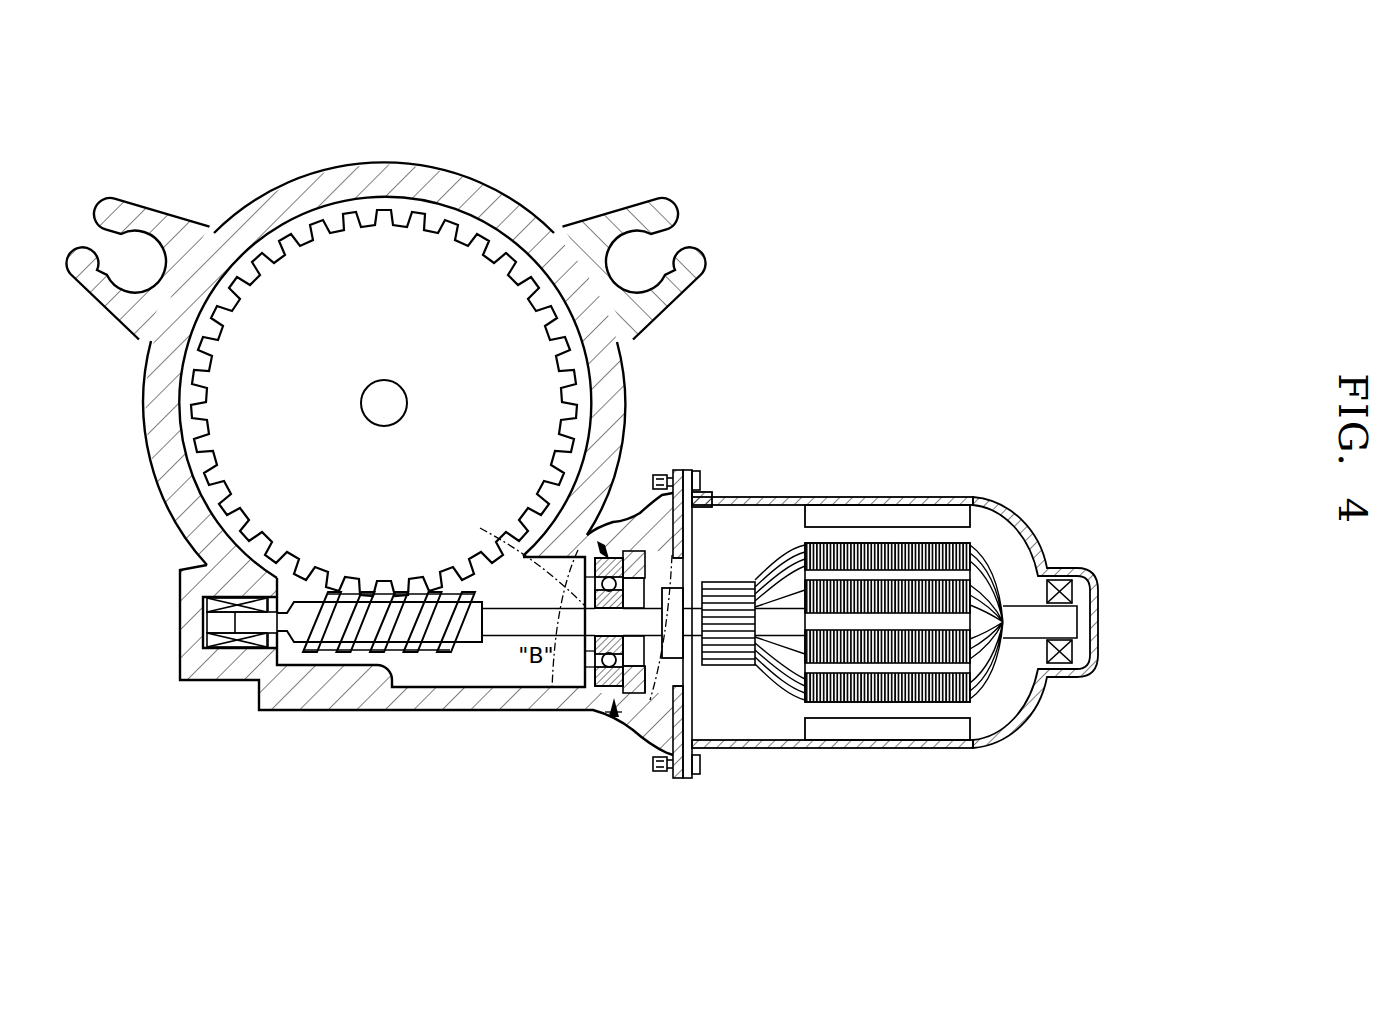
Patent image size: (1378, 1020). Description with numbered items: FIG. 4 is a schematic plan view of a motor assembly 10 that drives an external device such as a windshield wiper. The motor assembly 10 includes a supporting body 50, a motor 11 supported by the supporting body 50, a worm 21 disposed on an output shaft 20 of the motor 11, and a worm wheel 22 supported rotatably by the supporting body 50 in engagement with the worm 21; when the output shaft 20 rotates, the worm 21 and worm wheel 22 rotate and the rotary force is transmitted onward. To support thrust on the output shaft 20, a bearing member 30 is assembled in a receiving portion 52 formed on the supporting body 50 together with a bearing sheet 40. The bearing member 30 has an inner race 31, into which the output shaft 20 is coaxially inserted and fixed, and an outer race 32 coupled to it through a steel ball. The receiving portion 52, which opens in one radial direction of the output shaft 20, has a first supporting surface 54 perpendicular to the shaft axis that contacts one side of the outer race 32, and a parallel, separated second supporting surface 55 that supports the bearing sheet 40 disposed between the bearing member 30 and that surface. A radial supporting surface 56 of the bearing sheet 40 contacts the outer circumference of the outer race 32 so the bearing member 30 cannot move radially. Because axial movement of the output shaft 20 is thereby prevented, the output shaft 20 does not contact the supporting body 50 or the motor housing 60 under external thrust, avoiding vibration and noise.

The motor assembly 10 is at (798, 395).
The motor 11 is at (934, 482).
The output shaft 20 is at (498, 625).
The worm 21 is at (343, 652).
The worm wheel 22 is at (395, 255).
The bearing member 30 is at (600, 543).
The inner race 31 is at (594, 598).
The outer race 32 is at (622, 553).
The bearing sheet 40 is at (626, 705).
The supporting body 50 is at (408, 697).
The receiving portion 52 is at (628, 697).
The first supporting surface 54 is at (578, 665).
The second supporting surface 55 is at (650, 672).
The radial supporting surface 56 is at (610, 720).
The motor housing 60 is at (908, 750).